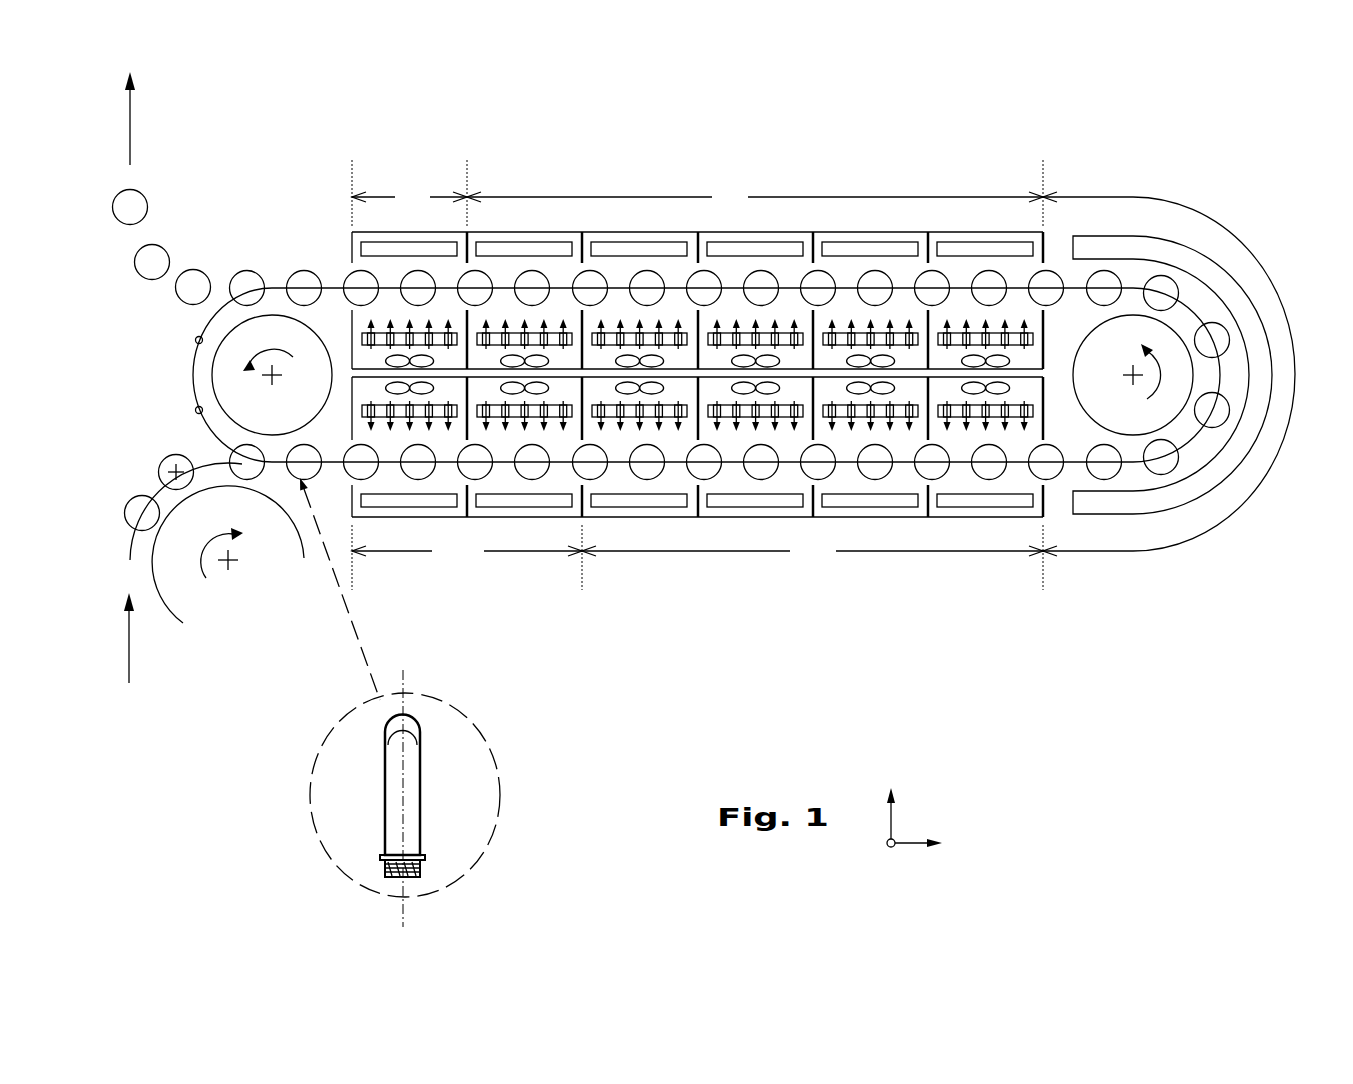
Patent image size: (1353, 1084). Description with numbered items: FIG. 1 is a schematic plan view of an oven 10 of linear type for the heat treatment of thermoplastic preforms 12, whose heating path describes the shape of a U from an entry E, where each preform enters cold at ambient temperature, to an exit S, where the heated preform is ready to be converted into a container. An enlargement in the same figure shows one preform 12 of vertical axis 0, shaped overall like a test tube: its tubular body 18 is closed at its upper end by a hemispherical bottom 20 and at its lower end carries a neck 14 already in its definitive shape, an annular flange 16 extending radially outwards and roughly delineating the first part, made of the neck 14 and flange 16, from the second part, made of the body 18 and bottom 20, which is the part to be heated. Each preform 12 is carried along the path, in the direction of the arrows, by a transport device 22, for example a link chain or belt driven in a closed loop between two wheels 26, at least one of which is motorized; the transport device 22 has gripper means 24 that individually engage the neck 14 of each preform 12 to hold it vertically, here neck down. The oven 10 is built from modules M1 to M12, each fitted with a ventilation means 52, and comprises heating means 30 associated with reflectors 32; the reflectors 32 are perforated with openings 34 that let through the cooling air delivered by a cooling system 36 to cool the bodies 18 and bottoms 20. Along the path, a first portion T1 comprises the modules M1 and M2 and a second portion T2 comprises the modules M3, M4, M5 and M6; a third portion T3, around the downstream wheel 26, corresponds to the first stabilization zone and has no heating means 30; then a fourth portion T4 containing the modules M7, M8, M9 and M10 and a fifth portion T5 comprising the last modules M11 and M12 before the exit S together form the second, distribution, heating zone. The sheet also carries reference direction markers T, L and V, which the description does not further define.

The oven 10 is at (1225, 185).
The preform 12 is at (1112, 280).
The neck 14 is at (383, 863).
The flange 16 is at (423, 858).
The body 18 is at (393, 783).
The bottom 20 is at (408, 713).
The vertical axis 0 is at (403, 915).
The transport device 22 is at (192, 372).
The gripper means 24 is at (196, 420).
The wheels 26 is at (272, 327).
The heating means 30 is at (553, 243).
The reflectors 32 is at (787, 335).
The openings 34 is at (903, 332).
The cooling system 36 is at (1040, 391).
The ventilation means 52 is at (1043, 357).
The module M1 is at (423, 528).
The module M2 is at (507, 528).
The module M3 is at (625, 528).
The module M4 is at (765, 528).
The module M5 is at (850, 528).
The module M6 is at (980, 528).
The module M7 is at (966, 222).
The module M8 is at (878, 222).
The module M9 is at (762, 222).
The module M10 is at (642, 222).
The module M11 is at (524, 222).
The module M12 is at (386, 222).
The first portion T1 is at (456, 552).
The second portion T2 is at (811, 552).
The third portion T3 is at (1296, 381).
The fourth portion T4 is at (729, 198).
The fifth portion T5 is at (411, 198).
The exit S is at (200, 240).
The entry E is at (138, 471).
The transverse axis T is at (897, 774).
The longitudinal axis L is at (950, 843).
The vertical axis V is at (875, 861).